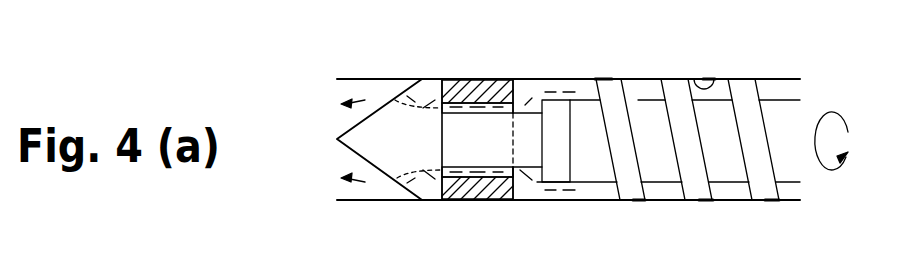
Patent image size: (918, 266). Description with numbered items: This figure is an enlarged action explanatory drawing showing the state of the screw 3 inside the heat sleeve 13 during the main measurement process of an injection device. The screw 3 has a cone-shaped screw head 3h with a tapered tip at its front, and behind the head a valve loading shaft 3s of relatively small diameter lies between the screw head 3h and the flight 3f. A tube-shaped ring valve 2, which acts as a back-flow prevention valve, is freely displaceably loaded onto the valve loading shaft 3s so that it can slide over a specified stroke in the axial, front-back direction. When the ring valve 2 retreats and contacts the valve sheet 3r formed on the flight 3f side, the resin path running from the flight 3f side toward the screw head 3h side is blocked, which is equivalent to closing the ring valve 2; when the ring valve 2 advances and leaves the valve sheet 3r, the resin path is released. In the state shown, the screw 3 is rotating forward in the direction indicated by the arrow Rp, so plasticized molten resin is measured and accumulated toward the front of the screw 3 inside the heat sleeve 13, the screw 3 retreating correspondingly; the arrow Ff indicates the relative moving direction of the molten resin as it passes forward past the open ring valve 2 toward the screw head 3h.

The ring valve 2 is at (497, 78).
The screw 3 is at (645, 99).
The flight 3f is at (607, 82).
The screw head 3h is at (347, 130).
The valve loading shaft 3s is at (470, 200).
The valve sheet 3r is at (537, 183).
The heat sleeve 13 is at (715, 82).
The relative moving direction of molten resin Ff is at (380, 94).
The rotation direction of the screw Rp is at (833, 113).